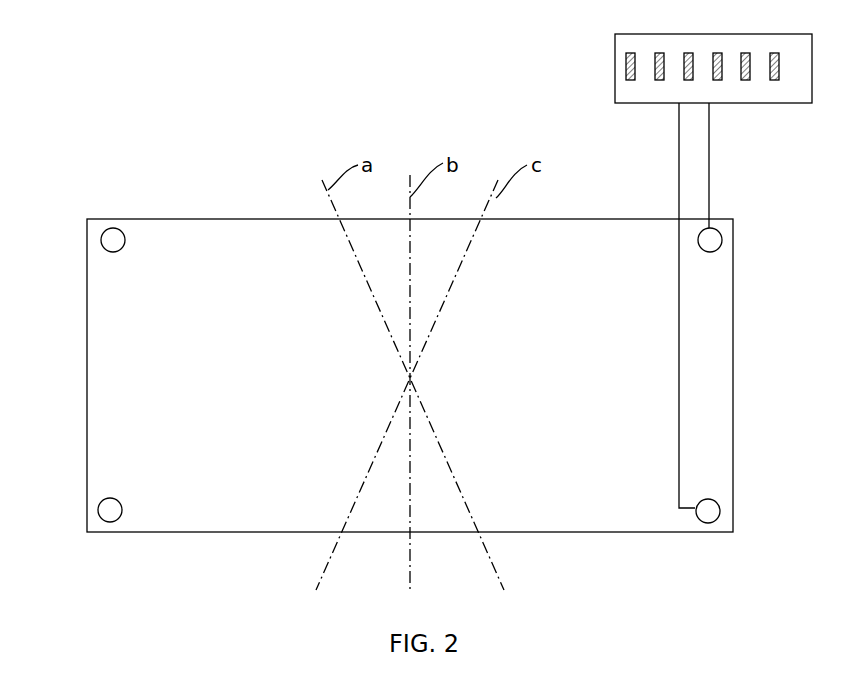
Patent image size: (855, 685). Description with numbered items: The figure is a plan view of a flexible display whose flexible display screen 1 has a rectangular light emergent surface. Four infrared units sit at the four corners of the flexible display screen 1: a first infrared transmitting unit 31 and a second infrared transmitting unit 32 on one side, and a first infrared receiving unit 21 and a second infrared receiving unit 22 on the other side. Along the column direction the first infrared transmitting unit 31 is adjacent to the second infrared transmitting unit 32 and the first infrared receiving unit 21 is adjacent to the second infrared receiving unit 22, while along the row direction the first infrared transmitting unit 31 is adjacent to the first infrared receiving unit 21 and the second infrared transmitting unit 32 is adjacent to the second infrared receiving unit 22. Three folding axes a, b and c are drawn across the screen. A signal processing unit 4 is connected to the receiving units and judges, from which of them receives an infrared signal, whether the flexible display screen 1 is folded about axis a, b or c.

The flexible display screen 1 is at (607, 226).
The signal processing unit 4 is at (615, 70).
The first infrared receiving unit 21 is at (718, 250).
The second infrared receiving unit 22 is at (710, 508).
The first infrared transmitting unit 31 is at (112, 240).
The second infrared transmitting unit 32 is at (104, 508).